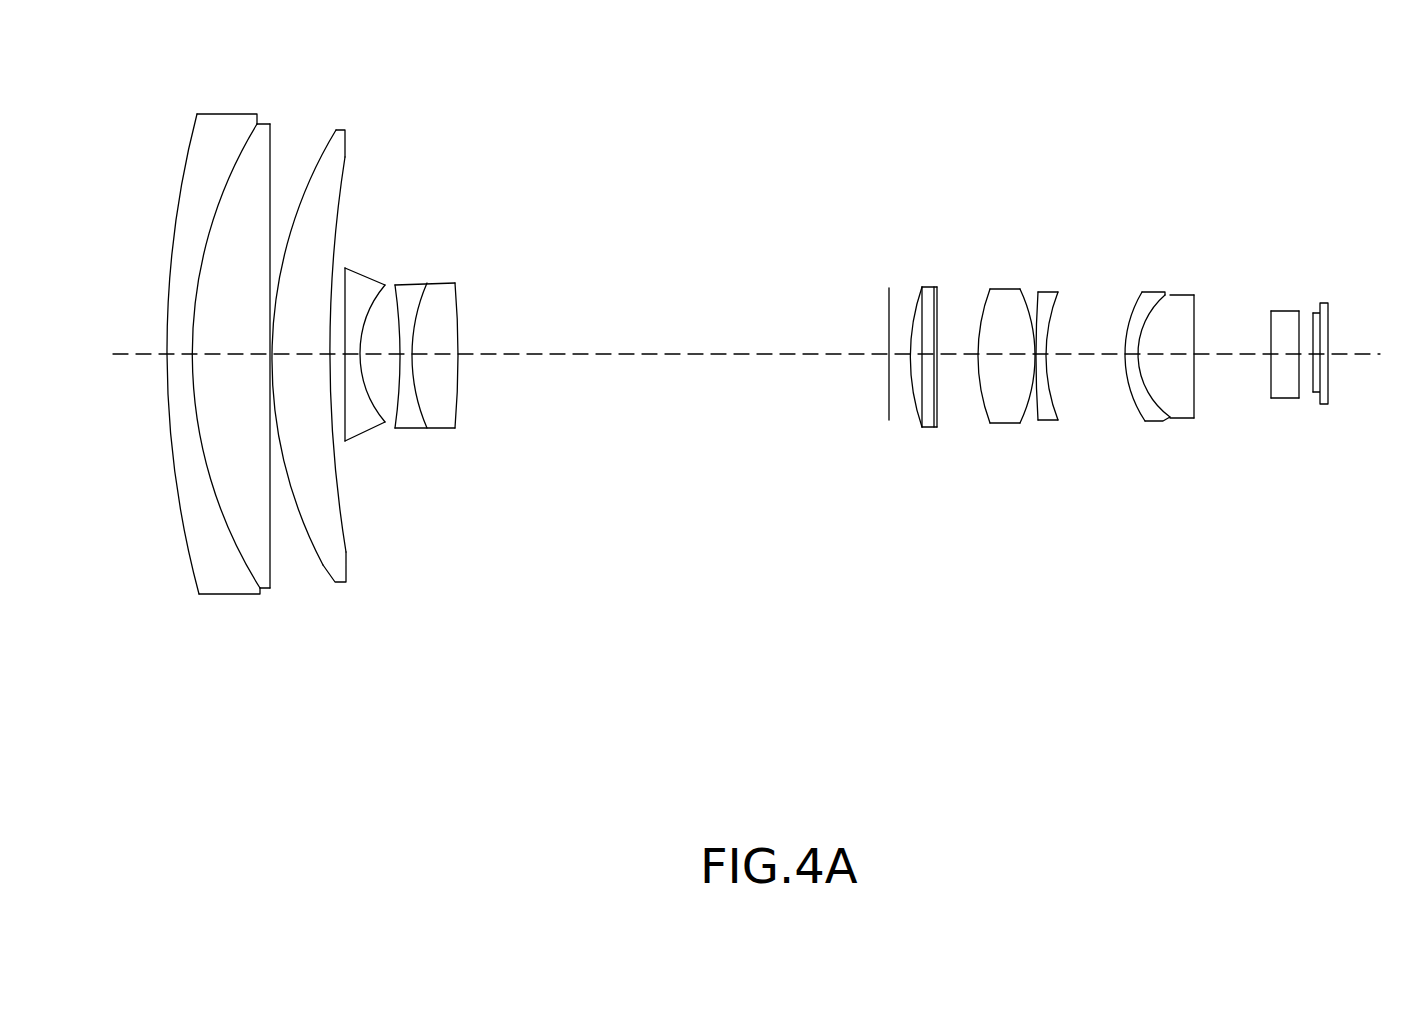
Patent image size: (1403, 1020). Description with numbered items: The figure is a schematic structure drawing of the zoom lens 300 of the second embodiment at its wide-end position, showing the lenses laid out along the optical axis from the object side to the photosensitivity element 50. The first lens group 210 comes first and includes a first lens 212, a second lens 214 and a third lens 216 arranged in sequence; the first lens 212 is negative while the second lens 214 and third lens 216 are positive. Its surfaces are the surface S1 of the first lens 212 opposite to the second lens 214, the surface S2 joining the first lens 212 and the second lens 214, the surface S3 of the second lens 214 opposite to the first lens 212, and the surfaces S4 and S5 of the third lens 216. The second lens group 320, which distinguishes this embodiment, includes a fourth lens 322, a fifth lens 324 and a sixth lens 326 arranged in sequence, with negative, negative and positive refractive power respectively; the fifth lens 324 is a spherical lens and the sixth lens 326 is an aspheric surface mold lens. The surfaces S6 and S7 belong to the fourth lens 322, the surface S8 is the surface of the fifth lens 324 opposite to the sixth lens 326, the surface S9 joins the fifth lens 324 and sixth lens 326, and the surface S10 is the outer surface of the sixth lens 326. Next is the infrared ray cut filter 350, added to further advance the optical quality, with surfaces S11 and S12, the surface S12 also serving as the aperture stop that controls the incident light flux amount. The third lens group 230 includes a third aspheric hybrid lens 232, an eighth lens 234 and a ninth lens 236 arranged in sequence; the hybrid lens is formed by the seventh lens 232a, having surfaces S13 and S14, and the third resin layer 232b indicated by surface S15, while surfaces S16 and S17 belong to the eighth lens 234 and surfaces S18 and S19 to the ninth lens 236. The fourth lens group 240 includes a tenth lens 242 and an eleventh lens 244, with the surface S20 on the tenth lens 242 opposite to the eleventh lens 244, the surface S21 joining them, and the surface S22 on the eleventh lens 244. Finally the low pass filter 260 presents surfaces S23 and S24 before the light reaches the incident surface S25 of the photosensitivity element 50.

The surface S1 is at (183, 162).
The surface S2 is at (232, 167).
The surface S3 is at (273, 163).
The surface S4 is at (308, 175).
The surface S5 is at (342, 198).
The surface S6 is at (348, 295).
The surface S7 is at (372, 298).
The surface S8 is at (397, 305).
The surface S9 is at (422, 303).
The surface S10 is at (462, 317).
The surface S11 is at (887, 320).
The surface S12 is at (903, 303).
The surface S13 is at (915, 315).
The surface S14 is at (938, 310).
The surface S15 is at (940, 323).
The surface S16 is at (981, 330).
The surface S17 is at (1027, 331).
The surface S18 is at (1040, 315).
The surface S19 is at (1050, 338).
The surface S20 is at (1125, 303).
The surface S21 is at (1150, 316).
The surface S22 is at (1198, 310).
The surface S23 is at (1265, 327).
The surface S24 is at (1297, 332).
The incident surface S25 is at (1312, 320).
The first lens 212 is at (213, 364).
The second lens 214 is at (275, 364).
The third lens 216 is at (338, 364).
The first lens group 210 is at (285, 396).
The fourth lens 322 is at (394, 422).
The fifth lens 324 is at (446, 441).
The sixth lens 326 is at (487, 422).
The second lens group 320 is at (455, 453).
The infrared ray cut filter 350 is at (831, 328).
The seventh lens 232a is at (856, 396).
The third resin layer 232b is at (911, 396).
The third aspheric hybrid lens 232 is at (871, 422).
The eighth lens 234 is at (992, 422).
The ninth lens 236 is at (1064, 422).
The third lens group 230 is at (948, 452).
The tenth lens 242 is at (1147, 422).
The eleventh lens 244 is at (1202, 442).
The fourth lens group 240 is at (1166, 453).
The low pass filter 260 is at (1292, 453).
The photosensitivity element 50 is at (1353, 478).
The zoom lens 300 is at (719, 427).